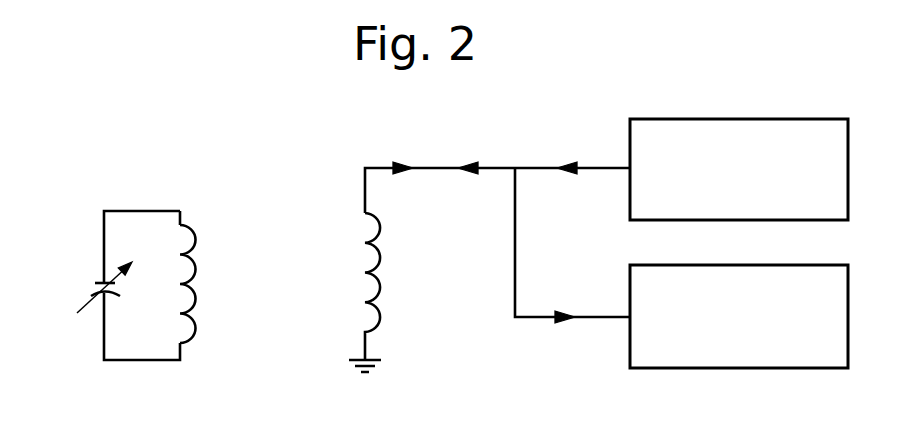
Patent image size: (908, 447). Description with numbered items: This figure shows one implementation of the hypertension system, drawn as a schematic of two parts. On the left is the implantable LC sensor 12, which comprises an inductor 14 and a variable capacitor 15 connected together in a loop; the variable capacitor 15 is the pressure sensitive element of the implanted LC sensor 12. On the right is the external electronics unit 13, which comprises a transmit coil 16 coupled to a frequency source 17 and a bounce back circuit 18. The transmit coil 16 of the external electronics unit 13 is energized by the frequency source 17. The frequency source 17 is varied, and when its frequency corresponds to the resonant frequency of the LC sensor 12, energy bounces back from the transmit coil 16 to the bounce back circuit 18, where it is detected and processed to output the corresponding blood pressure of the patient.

The implantable LC sensor 12 is at (228, 188).
The external electronics unit 13 is at (338, 130).
The inductor 14 is at (197, 241).
The variable capacitor 15 is at (92, 295).
The transmit coil 16 is at (371, 242).
The frequency source 17 is at (630, 138).
The bounce back circuit 18 is at (630, 284).